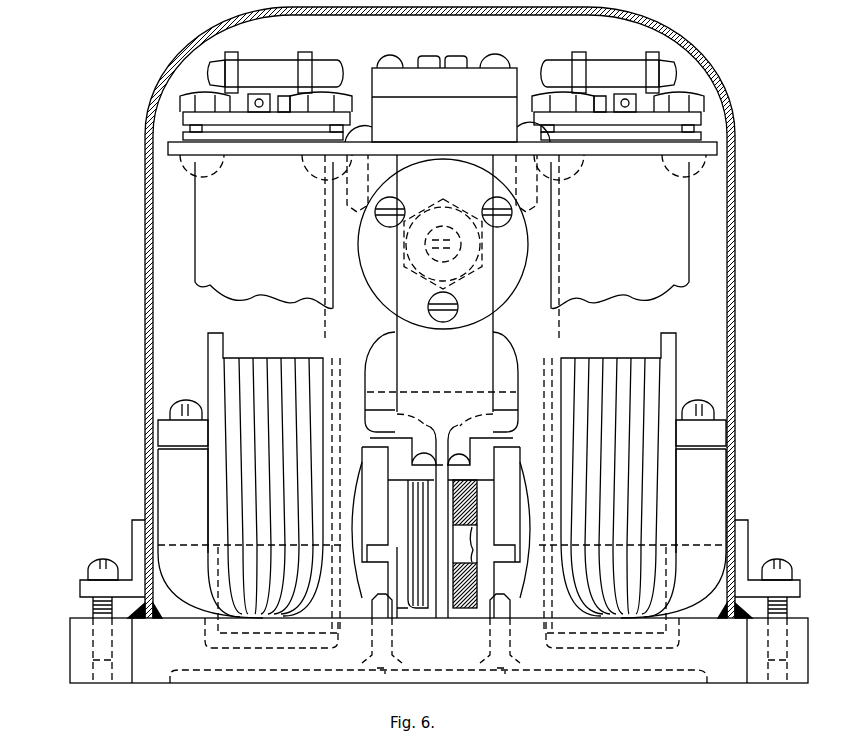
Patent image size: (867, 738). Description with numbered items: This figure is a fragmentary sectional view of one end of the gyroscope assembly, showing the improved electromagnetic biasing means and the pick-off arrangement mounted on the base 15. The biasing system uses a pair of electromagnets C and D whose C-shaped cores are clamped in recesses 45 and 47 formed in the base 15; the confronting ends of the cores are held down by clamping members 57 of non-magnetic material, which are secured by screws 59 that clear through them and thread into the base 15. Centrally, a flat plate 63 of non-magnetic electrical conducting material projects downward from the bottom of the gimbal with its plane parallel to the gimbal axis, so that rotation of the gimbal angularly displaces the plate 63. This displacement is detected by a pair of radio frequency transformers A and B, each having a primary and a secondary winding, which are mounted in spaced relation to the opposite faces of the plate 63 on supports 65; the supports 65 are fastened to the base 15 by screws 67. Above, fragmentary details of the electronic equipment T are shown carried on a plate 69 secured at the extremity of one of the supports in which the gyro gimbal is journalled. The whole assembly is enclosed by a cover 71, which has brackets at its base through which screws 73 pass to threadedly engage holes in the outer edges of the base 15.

The base 15 is at (276, 684).
The recess 45 is at (202, 541).
The recess 47 is at (712, 541).
The clamping member 57 is at (476, 455).
The screw 59 is at (437, 455).
The flat plate 63 is at (442, 480).
The support 65 is at (487, 594).
The screw 67 is at (372, 672).
The plate 69 is at (717, 147).
The cover 71 is at (696, 56).
The screw 73 is at (92, 560).
The radio frequency transformer A is at (418, 502).
The radio frequency transformer B is at (474, 508).
The electromagnet C is at (368, 456).
The electromagnet D is at (517, 456).
The electronic equipment T is at (202, 282).